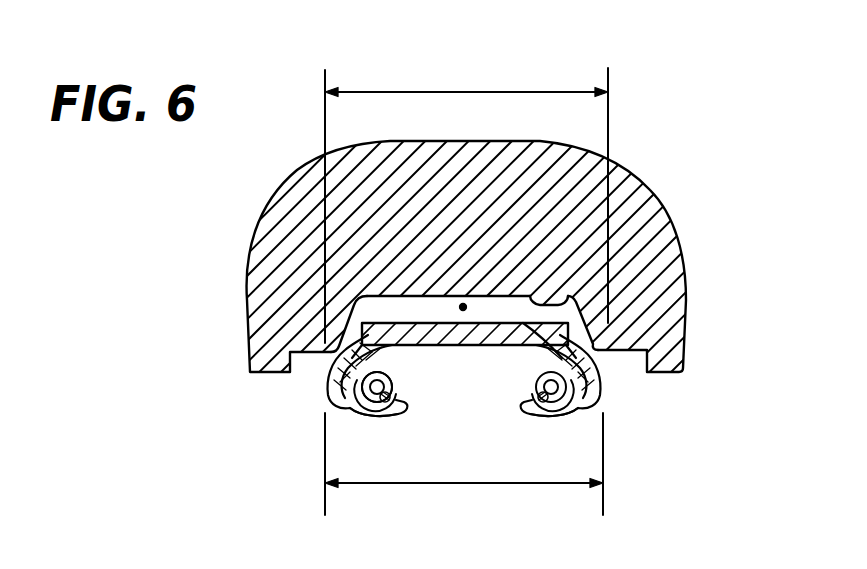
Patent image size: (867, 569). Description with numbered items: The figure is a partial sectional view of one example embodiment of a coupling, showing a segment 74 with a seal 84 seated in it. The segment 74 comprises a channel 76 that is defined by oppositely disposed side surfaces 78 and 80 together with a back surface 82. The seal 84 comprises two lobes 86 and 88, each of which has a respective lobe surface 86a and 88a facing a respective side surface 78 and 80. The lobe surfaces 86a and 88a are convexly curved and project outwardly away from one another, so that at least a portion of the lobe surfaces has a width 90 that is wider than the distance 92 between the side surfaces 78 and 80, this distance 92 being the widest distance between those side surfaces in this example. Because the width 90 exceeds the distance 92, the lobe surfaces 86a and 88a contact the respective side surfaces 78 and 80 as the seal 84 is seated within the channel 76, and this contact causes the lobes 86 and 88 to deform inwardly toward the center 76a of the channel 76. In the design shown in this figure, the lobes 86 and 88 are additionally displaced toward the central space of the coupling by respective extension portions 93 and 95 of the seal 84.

The segment 74 is at (652, 203).
The channel 76 is at (418, 312).
The center of channel 76a is at (463, 310).
The side surface 78 is at (338, 330).
The side surface 80 is at (600, 340).
The back surface 82 is at (565, 300).
The seal 84 is at (498, 340).
The lobe 86 is at (357, 420).
The lobe surface 86a is at (322, 392).
The lobe 88 is at (573, 407).
The lobe surface 88a is at (595, 352).
The width 90 is at (482, 483).
The distance 92 is at (517, 92).
The extension portion 93 is at (325, 378).
The extension portion 95 is at (558, 346).